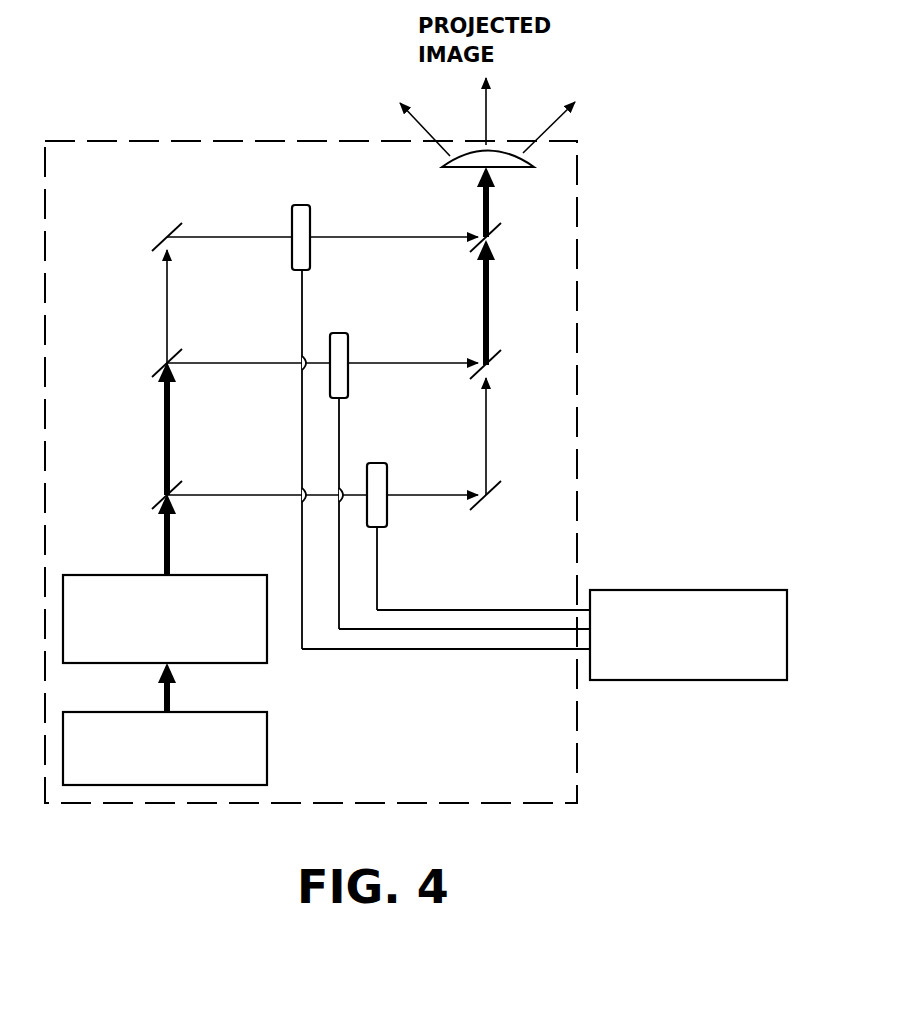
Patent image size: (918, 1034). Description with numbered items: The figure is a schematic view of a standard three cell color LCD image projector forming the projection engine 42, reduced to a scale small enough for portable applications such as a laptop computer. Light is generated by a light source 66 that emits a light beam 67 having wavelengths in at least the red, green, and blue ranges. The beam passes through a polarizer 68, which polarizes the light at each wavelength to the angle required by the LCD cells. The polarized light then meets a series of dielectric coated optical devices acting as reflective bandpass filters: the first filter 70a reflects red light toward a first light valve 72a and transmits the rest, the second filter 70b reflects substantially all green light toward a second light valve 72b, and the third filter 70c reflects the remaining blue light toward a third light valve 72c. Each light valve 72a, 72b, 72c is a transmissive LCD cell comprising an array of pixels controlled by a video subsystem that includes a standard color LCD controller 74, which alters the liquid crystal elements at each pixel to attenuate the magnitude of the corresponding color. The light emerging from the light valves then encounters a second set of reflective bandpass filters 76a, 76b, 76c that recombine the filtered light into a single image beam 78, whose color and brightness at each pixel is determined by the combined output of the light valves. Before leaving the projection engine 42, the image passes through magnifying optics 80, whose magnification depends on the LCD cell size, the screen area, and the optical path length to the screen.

The projection engine 42 is at (472, 750).
The light source 66 is at (268, 737).
The light beam 67 is at (156, 690).
The polarizer 68 is at (86, 575).
The first filter 70a is at (153, 500).
The second filter 70b is at (152, 375).
The third filter 70c is at (152, 250).
The first light valve 72a is at (388, 512).
The second light valve 72b is at (349, 380).
The third light valve 72c is at (311, 250).
The color LCD controller 74 is at (746, 590).
The reflective bandpass filter 76a is at (497, 485).
The reflective bandpass filter 76b is at (497, 354).
The reflective bandpass filter 76c is at (497, 227).
The image beam 78 is at (492, 196).
The magnifying optics 80 is at (468, 170).